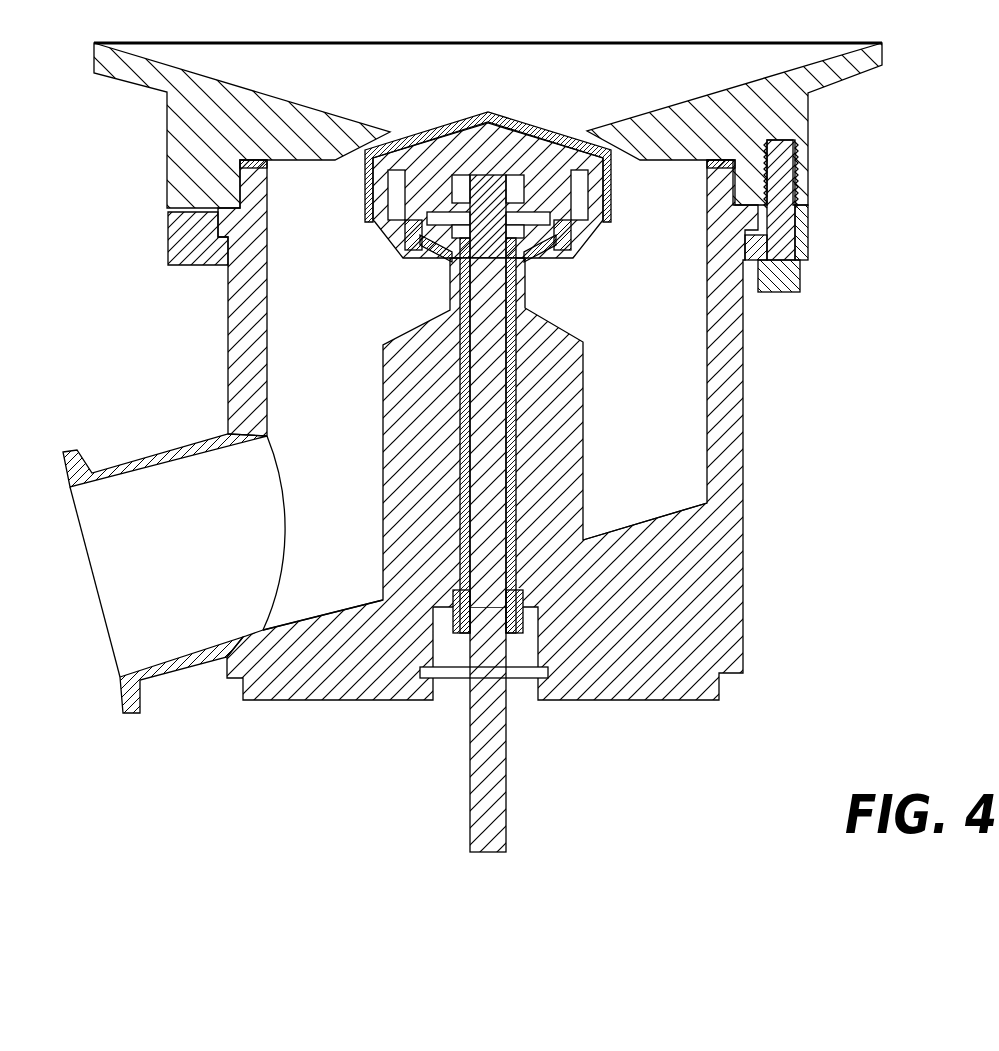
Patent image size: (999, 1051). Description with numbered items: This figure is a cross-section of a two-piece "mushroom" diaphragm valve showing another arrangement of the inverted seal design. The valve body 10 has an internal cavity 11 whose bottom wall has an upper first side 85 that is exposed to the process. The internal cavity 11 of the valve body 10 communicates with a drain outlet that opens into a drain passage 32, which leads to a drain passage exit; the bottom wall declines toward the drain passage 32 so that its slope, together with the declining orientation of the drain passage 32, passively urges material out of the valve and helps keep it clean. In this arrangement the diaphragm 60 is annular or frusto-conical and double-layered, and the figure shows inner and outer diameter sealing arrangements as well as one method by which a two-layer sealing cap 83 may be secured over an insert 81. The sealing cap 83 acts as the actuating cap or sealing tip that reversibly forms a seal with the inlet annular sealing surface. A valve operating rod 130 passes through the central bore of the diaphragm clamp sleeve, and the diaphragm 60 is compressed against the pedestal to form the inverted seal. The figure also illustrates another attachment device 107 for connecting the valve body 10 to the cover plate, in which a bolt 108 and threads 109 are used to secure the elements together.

The valve body 10 is at (735, 533).
The internal cavity 11 is at (350, 325).
The drain passage 32 is at (211, 563).
The diaphragm 60 is at (545, 258).
The insert 81 is at (537, 152).
The sealing cap 83 is at (505, 113).
The upper first side 85 is at (657, 517).
The attachment device 107 is at (832, 222).
The bolt 108 is at (787, 294).
The threads 109 is at (797, 141).
The valve operating rod 130 is at (495, 772).